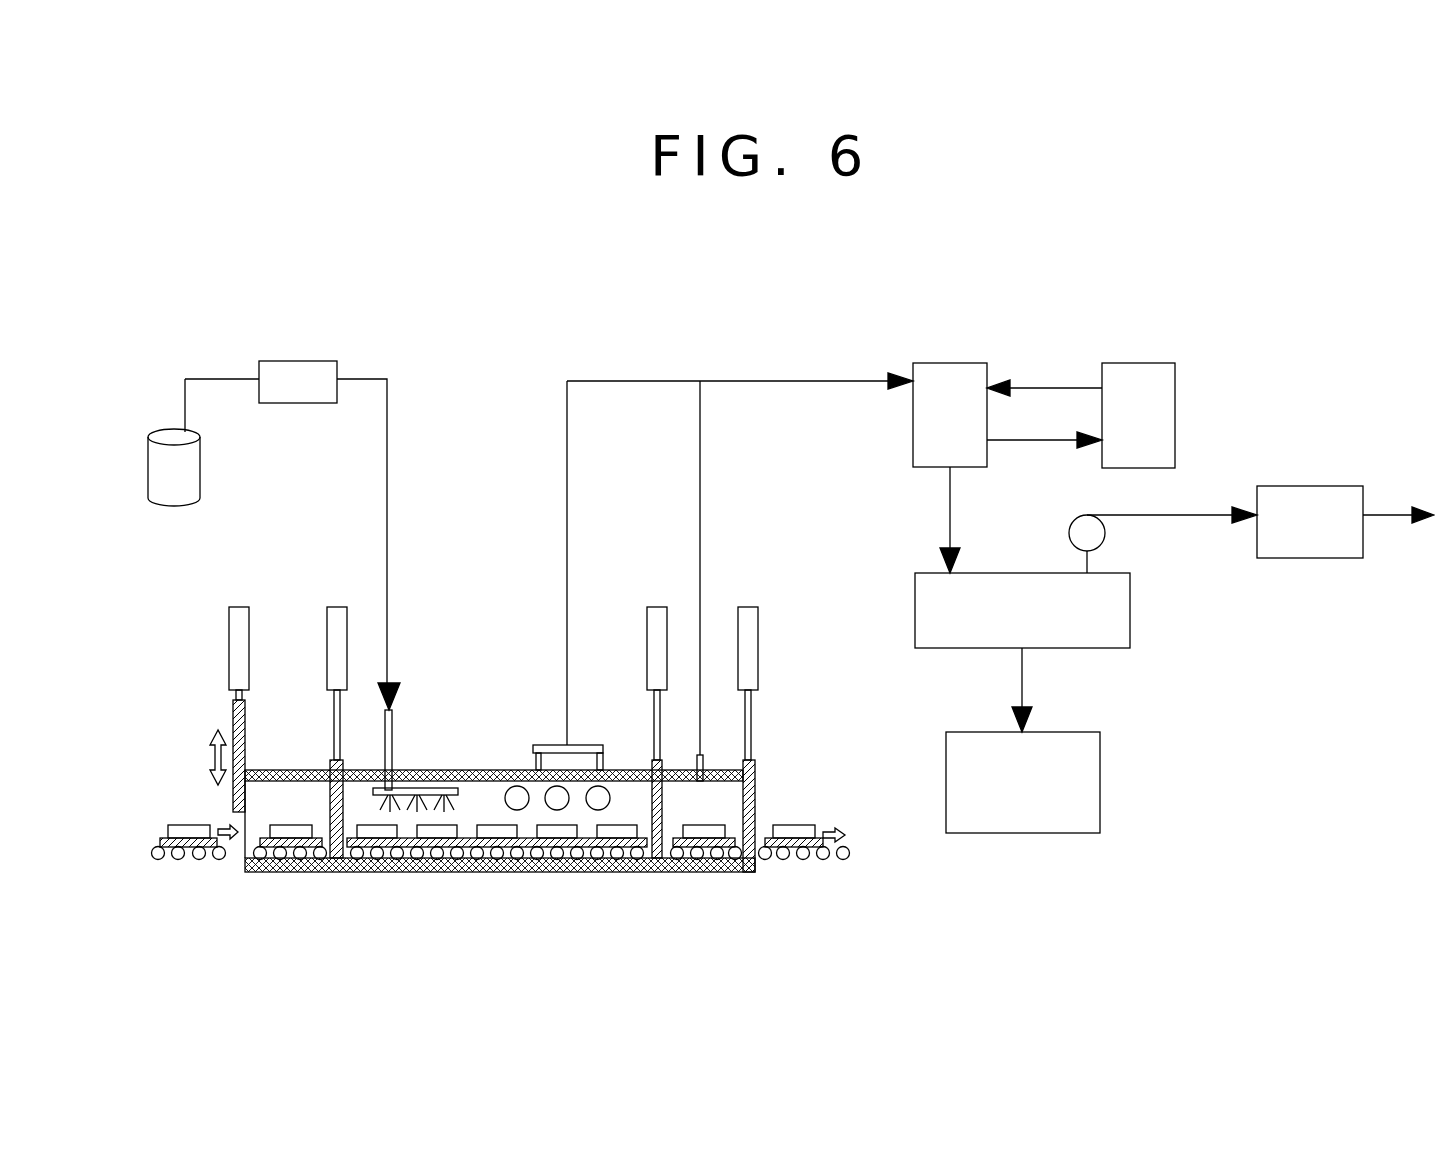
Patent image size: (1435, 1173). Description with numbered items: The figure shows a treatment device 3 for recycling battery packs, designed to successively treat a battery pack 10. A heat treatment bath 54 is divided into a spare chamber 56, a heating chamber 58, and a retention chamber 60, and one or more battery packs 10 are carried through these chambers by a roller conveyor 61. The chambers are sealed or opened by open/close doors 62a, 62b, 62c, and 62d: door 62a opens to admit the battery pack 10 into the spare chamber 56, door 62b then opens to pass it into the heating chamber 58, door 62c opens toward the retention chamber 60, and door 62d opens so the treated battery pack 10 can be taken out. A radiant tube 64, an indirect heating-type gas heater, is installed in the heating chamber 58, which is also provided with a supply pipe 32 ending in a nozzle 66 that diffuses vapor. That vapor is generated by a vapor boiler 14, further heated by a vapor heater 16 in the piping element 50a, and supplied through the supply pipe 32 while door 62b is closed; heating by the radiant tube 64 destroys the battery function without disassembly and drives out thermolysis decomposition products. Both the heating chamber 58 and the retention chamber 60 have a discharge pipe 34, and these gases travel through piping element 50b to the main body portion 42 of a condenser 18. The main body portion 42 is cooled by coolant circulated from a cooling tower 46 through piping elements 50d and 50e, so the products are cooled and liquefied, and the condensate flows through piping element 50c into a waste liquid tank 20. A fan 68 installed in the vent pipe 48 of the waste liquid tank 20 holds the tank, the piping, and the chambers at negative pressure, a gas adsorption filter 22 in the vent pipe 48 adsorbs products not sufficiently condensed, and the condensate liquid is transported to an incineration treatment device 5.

The treatment device 3 is at (558, 288).
The incineration treatment device 5 is at (1100, 770).
The battery pack 10 is at (185, 822).
The vapor boiler 14 is at (200, 472).
The vapor heater 16 is at (293, 360).
The condenser 18 is at (1060, 386).
The waste liquid tank 20 is at (1130, 610).
The gas adsorption filter 22 is at (1305, 485).
The supply pipe 32 is at (392, 727).
The discharge pipe 34 is at (548, 745).
The main body portion 42 is at (957, 362).
The cooling tower 46 is at (1140, 362).
The vent pipe 48 is at (1182, 515).
The piping element 50a is at (388, 405).
The piping element 50b is at (612, 380).
The piping element 50c is at (950, 510).
The piping element 50d is at (1048, 440).
The piping element 50e is at (1058, 388).
The heat treatment bath 54 is at (472, 882).
The spare chamber 56 is at (290, 792).
The heating chamber 58 is at (487, 793).
The retention chamber 60 is at (725, 812).
The roller conveyor 61 is at (158, 858).
The open/close door 62a is at (233, 712).
The open/close door 62b is at (330, 755).
The open/close door 62c is at (652, 757).
The open/close door 62d is at (755, 765).
The radiant tube 64 is at (517, 787).
The nozzle 66 is at (433, 788).
The fan 68 is at (1105, 536).